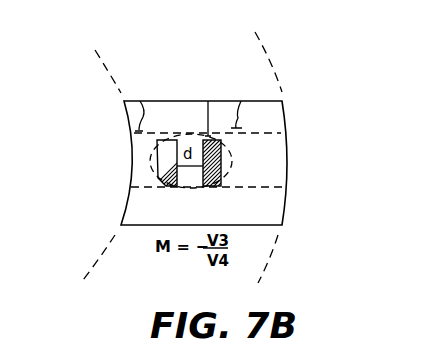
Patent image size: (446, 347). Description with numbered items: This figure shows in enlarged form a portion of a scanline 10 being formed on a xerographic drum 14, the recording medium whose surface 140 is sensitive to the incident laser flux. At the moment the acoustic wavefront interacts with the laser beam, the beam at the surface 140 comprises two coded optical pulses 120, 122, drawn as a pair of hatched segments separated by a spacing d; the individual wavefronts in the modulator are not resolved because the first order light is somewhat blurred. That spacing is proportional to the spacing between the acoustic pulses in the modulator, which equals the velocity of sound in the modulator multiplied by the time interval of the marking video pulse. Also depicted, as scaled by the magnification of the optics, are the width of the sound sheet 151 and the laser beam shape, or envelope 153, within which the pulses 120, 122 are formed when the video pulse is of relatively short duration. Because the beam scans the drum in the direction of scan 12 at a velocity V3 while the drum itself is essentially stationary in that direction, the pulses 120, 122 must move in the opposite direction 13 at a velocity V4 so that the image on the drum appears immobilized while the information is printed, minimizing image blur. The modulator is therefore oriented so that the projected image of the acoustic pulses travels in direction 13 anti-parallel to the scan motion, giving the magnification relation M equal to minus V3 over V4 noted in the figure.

The scanline 10 is at (241, 101).
The xerographic drum 14 is at (282, 101).
The sound sheet 151 is at (140, 101).
The coded optical pulse 122 is at (208, 101).
The coded optical pulse 120 is at (161, 134).
The laser beam envelope 153 is at (158, 183).
The direction anti-parallel to scan 13 is at (158, 170).
The direction of scan 12 is at (221, 151).
The surface of recording medium 140 is at (281, 206).